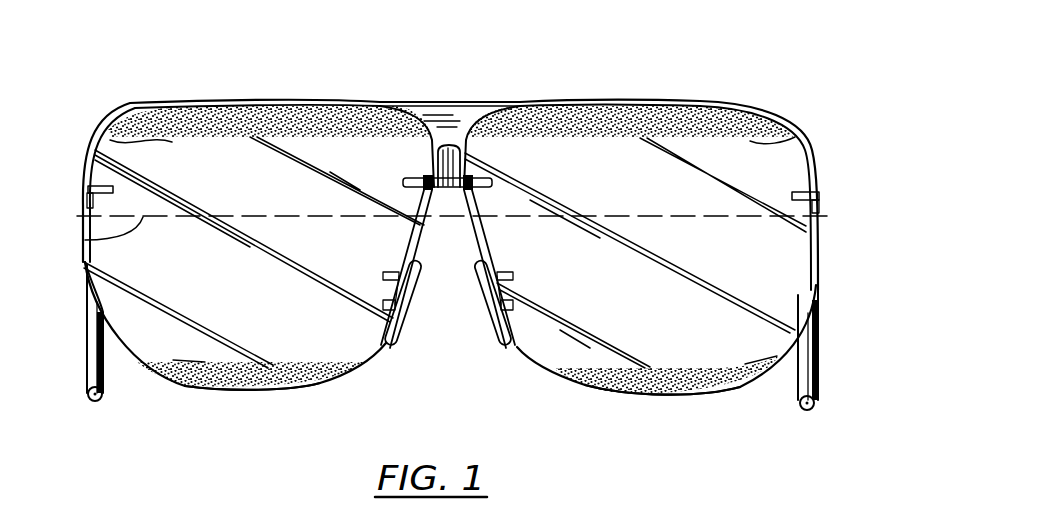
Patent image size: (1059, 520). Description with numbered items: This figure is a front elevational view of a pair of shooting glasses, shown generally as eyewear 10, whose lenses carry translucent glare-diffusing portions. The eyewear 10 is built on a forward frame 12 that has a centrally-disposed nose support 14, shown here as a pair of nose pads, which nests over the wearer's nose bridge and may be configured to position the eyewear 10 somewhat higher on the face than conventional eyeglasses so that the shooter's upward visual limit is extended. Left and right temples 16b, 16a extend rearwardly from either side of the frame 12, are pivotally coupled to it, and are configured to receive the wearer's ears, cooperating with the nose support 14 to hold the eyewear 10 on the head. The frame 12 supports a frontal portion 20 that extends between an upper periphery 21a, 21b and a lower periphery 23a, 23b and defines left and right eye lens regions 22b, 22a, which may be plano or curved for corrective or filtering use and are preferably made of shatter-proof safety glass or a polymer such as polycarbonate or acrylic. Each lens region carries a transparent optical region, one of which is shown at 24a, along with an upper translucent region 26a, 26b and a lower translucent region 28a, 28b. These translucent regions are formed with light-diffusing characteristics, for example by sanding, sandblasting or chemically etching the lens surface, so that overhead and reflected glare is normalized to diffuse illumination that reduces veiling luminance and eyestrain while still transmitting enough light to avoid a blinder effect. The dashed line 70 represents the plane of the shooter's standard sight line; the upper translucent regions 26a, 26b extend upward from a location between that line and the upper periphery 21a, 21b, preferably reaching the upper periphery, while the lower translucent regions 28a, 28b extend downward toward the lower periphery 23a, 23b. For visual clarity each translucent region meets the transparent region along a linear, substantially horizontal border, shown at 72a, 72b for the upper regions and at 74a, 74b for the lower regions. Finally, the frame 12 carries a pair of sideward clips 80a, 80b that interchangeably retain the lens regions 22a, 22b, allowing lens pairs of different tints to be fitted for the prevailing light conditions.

The eyewear 10 is at (806, 60).
The forward frame 12 is at (500, 104).
The nose support 14 is at (493, 313).
The right temple 16a is at (818, 318).
The left temple 16b is at (88, 377).
The frontal portion 20 is at (822, 128).
The upper periphery 21a is at (650, 102).
The upper periphery 21b is at (267, 100).
The eye lens region 22a is at (820, 237).
The eye lens region 22b is at (80, 215).
The lower periphery 23a is at (663, 394).
The lower periphery 23b is at (287, 389).
The transparent optical region 24a is at (782, 262).
The upper translucent region 26a is at (753, 111).
The upper translucent region 26b is at (182, 113).
The lower translucent region 28a is at (707, 394).
The lower translucent region 28b is at (228, 365).
The dashed line 70 is at (85, 240).
The border of upper translucent region 72a is at (750, 141).
The border of upper translucent region 72b is at (110, 140).
The border of lower translucent region 74a is at (777, 356).
The border of lower translucent region 74b is at (173, 360).
The sideward clip 80a is at (820, 194).
The sideward clip 80b is at (88, 188).